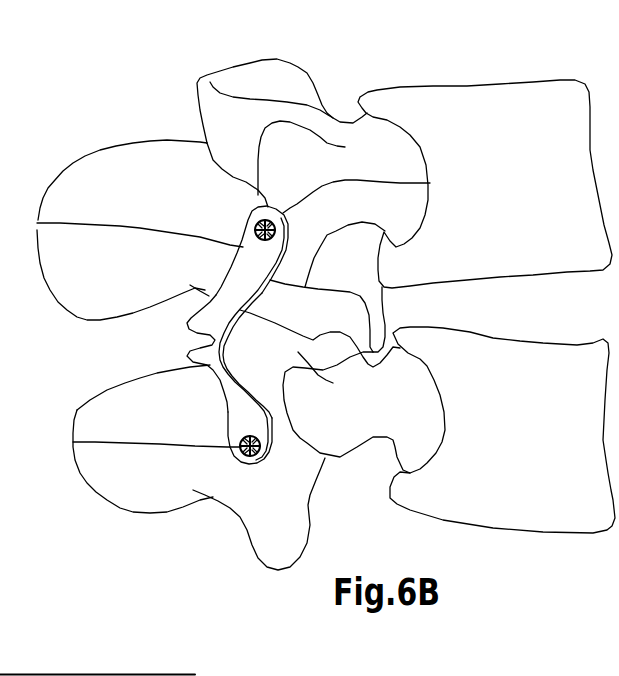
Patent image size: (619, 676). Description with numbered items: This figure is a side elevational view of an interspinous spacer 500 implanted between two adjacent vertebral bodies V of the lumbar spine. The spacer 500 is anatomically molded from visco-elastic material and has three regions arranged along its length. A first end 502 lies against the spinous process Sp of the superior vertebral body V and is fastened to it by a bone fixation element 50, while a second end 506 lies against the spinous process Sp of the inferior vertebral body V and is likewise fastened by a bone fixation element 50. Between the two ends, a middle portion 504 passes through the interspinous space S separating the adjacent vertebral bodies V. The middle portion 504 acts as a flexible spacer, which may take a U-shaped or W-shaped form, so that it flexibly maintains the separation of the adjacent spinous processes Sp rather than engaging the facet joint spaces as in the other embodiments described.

The interspinous spacer 500 is at (194, 308).
The bone fixation element 50 is at (256, 227).
The first end 502 is at (268, 210).
The middle portion 504 is at (213, 344).
The second end 506 is at (245, 460).
The spinous process Sp is at (88, 192).
The vertebral body V is at (482, 127).
The interspinous space S is at (78, 343).